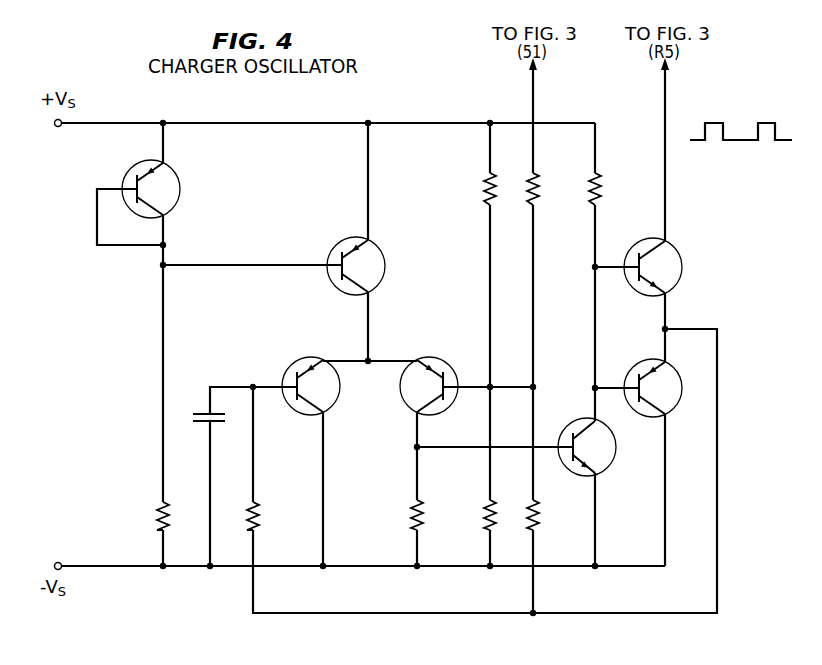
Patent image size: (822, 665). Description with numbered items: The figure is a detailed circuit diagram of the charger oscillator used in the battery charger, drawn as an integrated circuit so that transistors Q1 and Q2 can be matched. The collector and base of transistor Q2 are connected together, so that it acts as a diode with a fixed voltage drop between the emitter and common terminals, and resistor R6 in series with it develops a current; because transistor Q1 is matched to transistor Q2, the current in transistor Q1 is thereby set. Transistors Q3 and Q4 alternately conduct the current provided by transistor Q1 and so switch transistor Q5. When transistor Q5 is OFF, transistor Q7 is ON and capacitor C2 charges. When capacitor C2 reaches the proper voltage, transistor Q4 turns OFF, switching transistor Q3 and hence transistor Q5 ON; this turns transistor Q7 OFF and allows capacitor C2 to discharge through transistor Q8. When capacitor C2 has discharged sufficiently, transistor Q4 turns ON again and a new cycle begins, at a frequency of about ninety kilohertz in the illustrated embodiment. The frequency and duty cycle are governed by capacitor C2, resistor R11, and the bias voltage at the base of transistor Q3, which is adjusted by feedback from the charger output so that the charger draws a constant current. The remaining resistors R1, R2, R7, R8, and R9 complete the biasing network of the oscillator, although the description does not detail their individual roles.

The transistor Q1 is at (385, 266).
The transistor Q2 is at (180, 192).
The transistor Q3 is at (438, 364).
The transistor Q4 is at (300, 364).
The transistor Q5 is at (609, 466).
The transistor Q7 is at (682, 267).
The transistor Q8 is at (676, 406).
The resistor R1 is at (405, 515).
The resistor R2 is at (608, 189).
The resistor R6 is at (149, 516).
The resistor R7 is at (477, 515).
The resistor R8 is at (546, 515).
The resistor R9 is at (477, 189).
The resistor R11 is at (239, 516).
The capacitor C2 is at (195, 413).